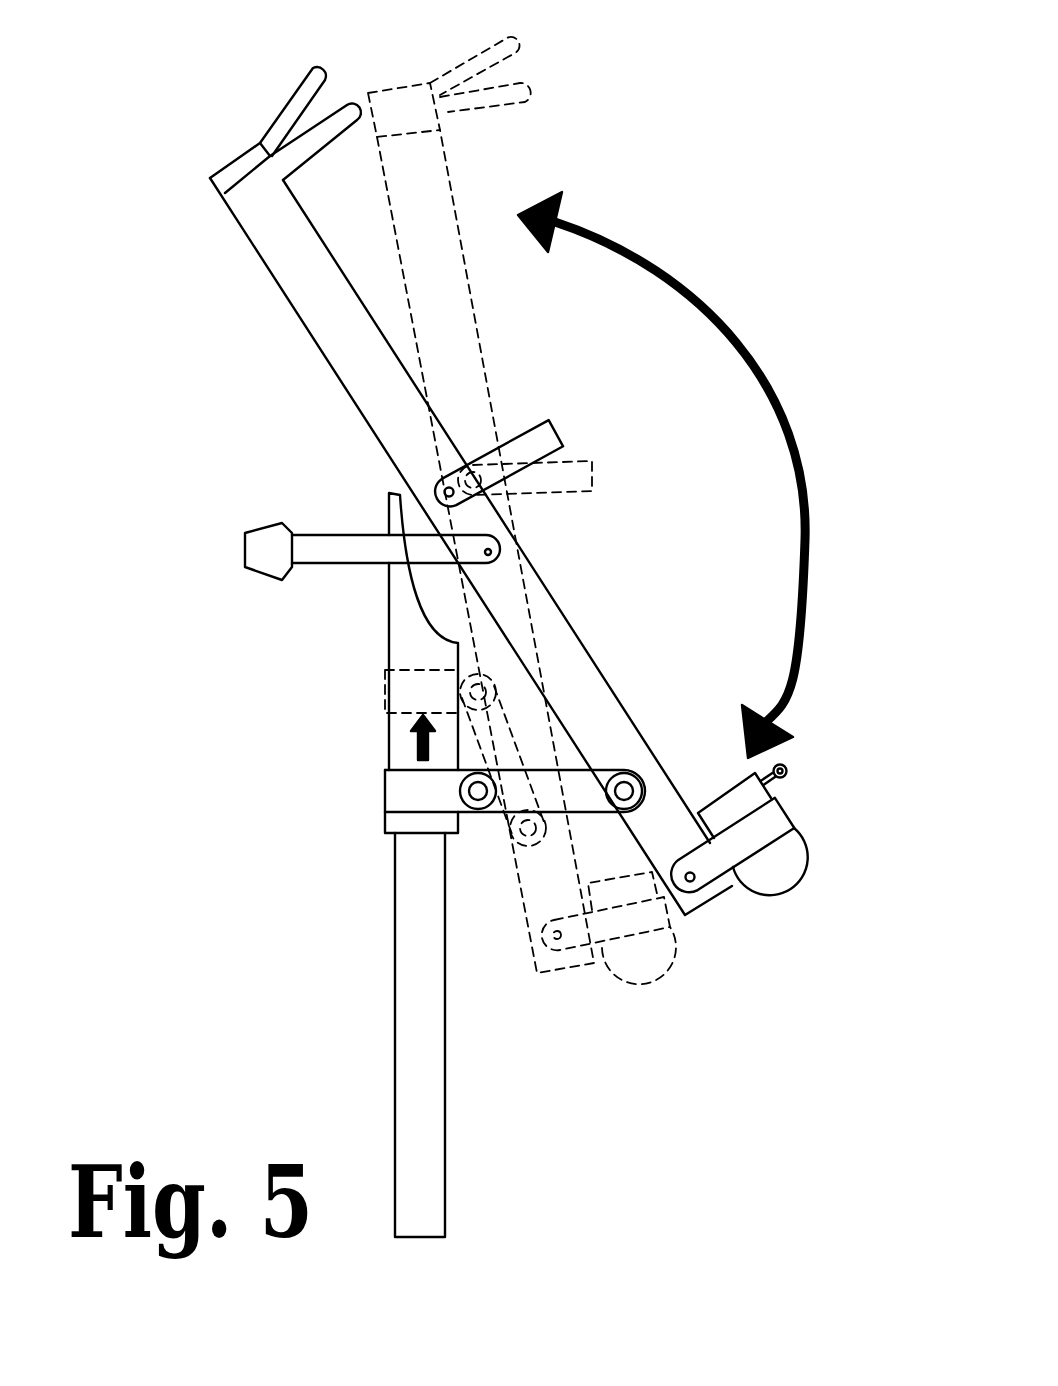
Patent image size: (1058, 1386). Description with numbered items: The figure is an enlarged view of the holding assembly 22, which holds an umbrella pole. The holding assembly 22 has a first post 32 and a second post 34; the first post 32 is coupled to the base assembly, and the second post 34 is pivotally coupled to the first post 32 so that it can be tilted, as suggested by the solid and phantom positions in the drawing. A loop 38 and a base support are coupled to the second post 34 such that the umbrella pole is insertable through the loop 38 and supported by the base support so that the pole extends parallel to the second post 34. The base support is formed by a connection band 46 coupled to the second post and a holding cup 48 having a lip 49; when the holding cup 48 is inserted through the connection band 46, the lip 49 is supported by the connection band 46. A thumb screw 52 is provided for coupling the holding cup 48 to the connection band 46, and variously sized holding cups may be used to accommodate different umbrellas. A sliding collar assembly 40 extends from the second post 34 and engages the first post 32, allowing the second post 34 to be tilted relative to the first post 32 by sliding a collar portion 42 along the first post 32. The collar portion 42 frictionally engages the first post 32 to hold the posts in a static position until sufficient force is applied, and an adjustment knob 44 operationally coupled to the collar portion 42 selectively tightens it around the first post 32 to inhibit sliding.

The holding assembly 22 is at (293, 460).
The first post 32 is at (418, 1007).
The second post 34 is at (290, 250).
The loop 38 is at (310, 143).
The sliding collar assembly 40 is at (303, 715).
The collar portion 42 is at (407, 788).
The adjustment knob 44 is at (470, 813).
The connection band 46 is at (765, 825).
The holding cup 48 is at (785, 875).
The lip 49 is at (727, 790).
The thumb screw 52 is at (787, 773).